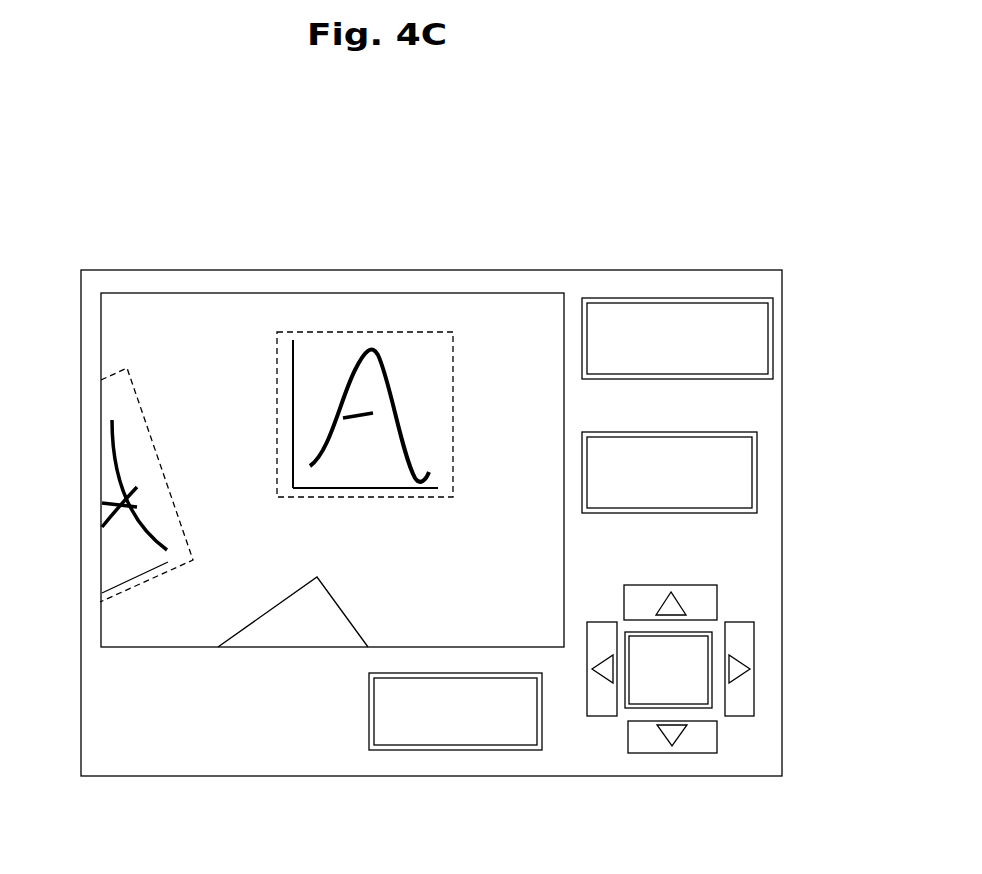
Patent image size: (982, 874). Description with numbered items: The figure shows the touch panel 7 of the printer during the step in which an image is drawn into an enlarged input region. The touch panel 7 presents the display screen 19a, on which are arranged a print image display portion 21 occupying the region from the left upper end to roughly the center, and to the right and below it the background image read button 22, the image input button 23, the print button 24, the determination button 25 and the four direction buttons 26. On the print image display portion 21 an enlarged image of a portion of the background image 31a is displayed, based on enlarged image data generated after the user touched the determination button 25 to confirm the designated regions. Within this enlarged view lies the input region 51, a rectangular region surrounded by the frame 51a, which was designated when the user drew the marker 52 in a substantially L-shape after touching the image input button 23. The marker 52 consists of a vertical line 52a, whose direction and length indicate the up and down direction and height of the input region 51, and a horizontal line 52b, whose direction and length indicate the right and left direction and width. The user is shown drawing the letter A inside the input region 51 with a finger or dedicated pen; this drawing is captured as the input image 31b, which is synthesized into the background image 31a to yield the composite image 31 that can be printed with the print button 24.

The touch panel 7 is at (117, 265).
The display screen 19a is at (675, 283).
The print image display portion 21 is at (517, 292).
The background image read button 22 is at (760, 366).
The image input button 23 is at (746, 495).
The print button 24 is at (505, 727).
The determination button 25 is at (700, 695).
The direction buttons 26 is at (747, 704).
The composite image 31 is at (340, 190).
The background image 31a is at (185, 332).
The input image 31b is at (327, 362).
The input region 51 is at (423, 361).
The frame 51a is at (373, 331).
The marker 52 is at (276, 497).
The vertical line 52a is at (293, 408).
The horizontal line 52b is at (388, 490).